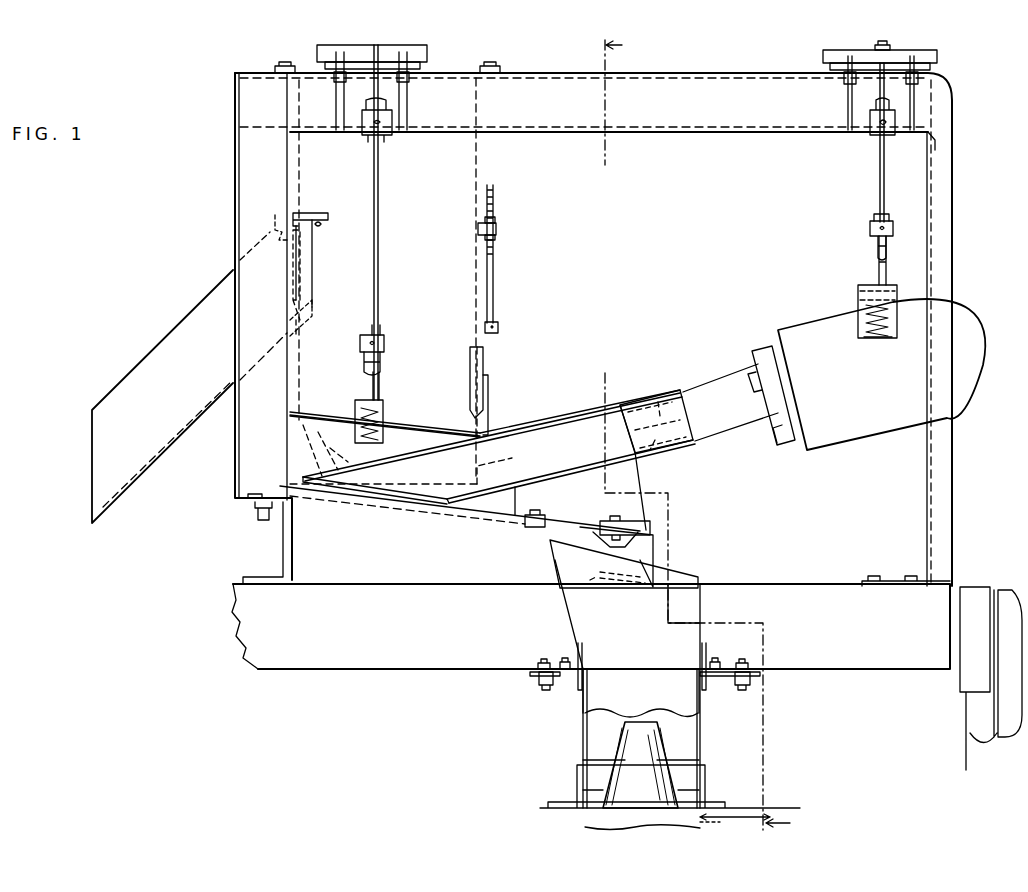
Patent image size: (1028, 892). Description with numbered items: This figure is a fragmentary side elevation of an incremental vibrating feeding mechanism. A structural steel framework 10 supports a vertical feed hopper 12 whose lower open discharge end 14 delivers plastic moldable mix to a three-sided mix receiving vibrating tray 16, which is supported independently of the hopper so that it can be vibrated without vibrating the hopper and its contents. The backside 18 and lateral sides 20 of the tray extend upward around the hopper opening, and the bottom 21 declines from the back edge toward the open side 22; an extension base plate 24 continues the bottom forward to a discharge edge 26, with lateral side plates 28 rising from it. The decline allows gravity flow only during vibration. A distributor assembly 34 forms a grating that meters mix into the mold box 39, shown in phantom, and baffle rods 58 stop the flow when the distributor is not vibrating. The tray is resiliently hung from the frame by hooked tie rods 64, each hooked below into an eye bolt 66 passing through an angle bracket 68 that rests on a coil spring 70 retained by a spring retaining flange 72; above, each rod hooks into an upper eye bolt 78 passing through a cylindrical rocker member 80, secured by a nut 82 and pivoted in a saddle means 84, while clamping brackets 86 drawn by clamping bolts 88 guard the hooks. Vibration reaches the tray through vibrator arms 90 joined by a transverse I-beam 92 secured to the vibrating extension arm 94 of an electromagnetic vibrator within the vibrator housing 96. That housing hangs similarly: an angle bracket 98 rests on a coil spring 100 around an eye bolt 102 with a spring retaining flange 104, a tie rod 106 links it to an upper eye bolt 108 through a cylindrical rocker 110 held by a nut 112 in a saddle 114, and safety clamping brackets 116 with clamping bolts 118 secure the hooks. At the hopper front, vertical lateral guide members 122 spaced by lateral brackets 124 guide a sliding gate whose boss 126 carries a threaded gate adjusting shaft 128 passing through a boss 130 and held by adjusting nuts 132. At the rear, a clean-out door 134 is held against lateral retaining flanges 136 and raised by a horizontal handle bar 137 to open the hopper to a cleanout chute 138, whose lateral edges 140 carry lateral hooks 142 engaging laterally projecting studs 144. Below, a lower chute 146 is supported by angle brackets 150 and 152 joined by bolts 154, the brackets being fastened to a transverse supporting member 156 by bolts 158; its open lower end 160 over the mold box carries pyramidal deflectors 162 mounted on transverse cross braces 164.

The structural steel framework 10 is at (230, 166).
The vertical feed hopper 12 is at (460, 172).
The lower open discharge end 14 is at (440, 488).
The mix receiving vibrating tray 16 is at (326, 412).
The backside 18 is at (278, 452).
The lateral sides 20 is at (396, 430).
The bottom 21 is at (400, 508).
The open side 22 is at (500, 464).
The extension base plate 24 is at (525, 520).
The forward discharge edge 26 is at (598, 500).
The lateral side plates 28 is at (628, 480).
The distributor assembly 34 is at (660, 555).
The mold box 39 is at (735, 825).
The baffle rods 58 is at (560, 580).
The hooked tie rods 64 is at (380, 240).
The eye bolt 66 is at (380, 376).
The angle bracket 68 is at (362, 400).
The coil spring 70 is at (360, 437).
The spring retaining flange 72 is at (370, 444).
The upper eye bolt 78 is at (380, 98).
The cylindrical rocker member 80 is at (427, 58).
The nut 82 is at (405, 44).
The saddle means 84 is at (400, 67).
The clamping brackets 86 is at (384, 342).
The clamping bolts 88 is at (372, 328).
The vibrator arms 90 is at (568, 416).
The transverse I-beam 92 is at (652, 398).
The vibrating extension arm 94 is at (739, 395).
The vibrator housing 96 is at (845, 396).
The angle bracket 98 is at (860, 312).
The coil spring 100 is at (888, 333).
The eye bolt 102 is at (878, 278).
The spring retaining flange 104 is at (878, 340).
The tie rod 106 is at (880, 180).
The upper eye bolt 108 is at (880, 90).
The cylindrical rocker 110 is at (937, 60).
The nut 112 is at (890, 47).
The saddle 114 is at (915, 72).
The safety clamping brackets 116 is at (893, 235).
The clamping bolts 118 is at (870, 228).
The vertical lateral guide members 122 is at (490, 400).
The lateral brackets 124 is at (472, 368).
The boss 126 is at (500, 328).
The gate adjusting shaft 128 is at (494, 285).
The boss 130 is at (497, 232).
The adjusting nuts 132 is at (497, 220).
The clean-out door 134 is at (303, 288).
The lateral retaining flanges 136 is at (290, 310).
The horizontal handle bar 137 is at (274, 218).
The cleanout chute 138 is at (90, 436).
The lateral edges 140 is at (314, 256).
The lateral hooks 142 is at (318, 212).
The laterally projecting studs 144 is at (318, 228).
The lower chute 146 is at (585, 630).
The angle brackets 150 is at (575, 656).
The angle brackets 152 is at (580, 690).
The bolts 154 is at (572, 688).
The transverse supporting member 156 is at (538, 680).
The bolts 158 is at (543, 660).
The open lower end 160 is at (575, 800).
The pyramidal deflectors 162 is at (658, 756).
The transverse cross braces 164 is at (683, 775).